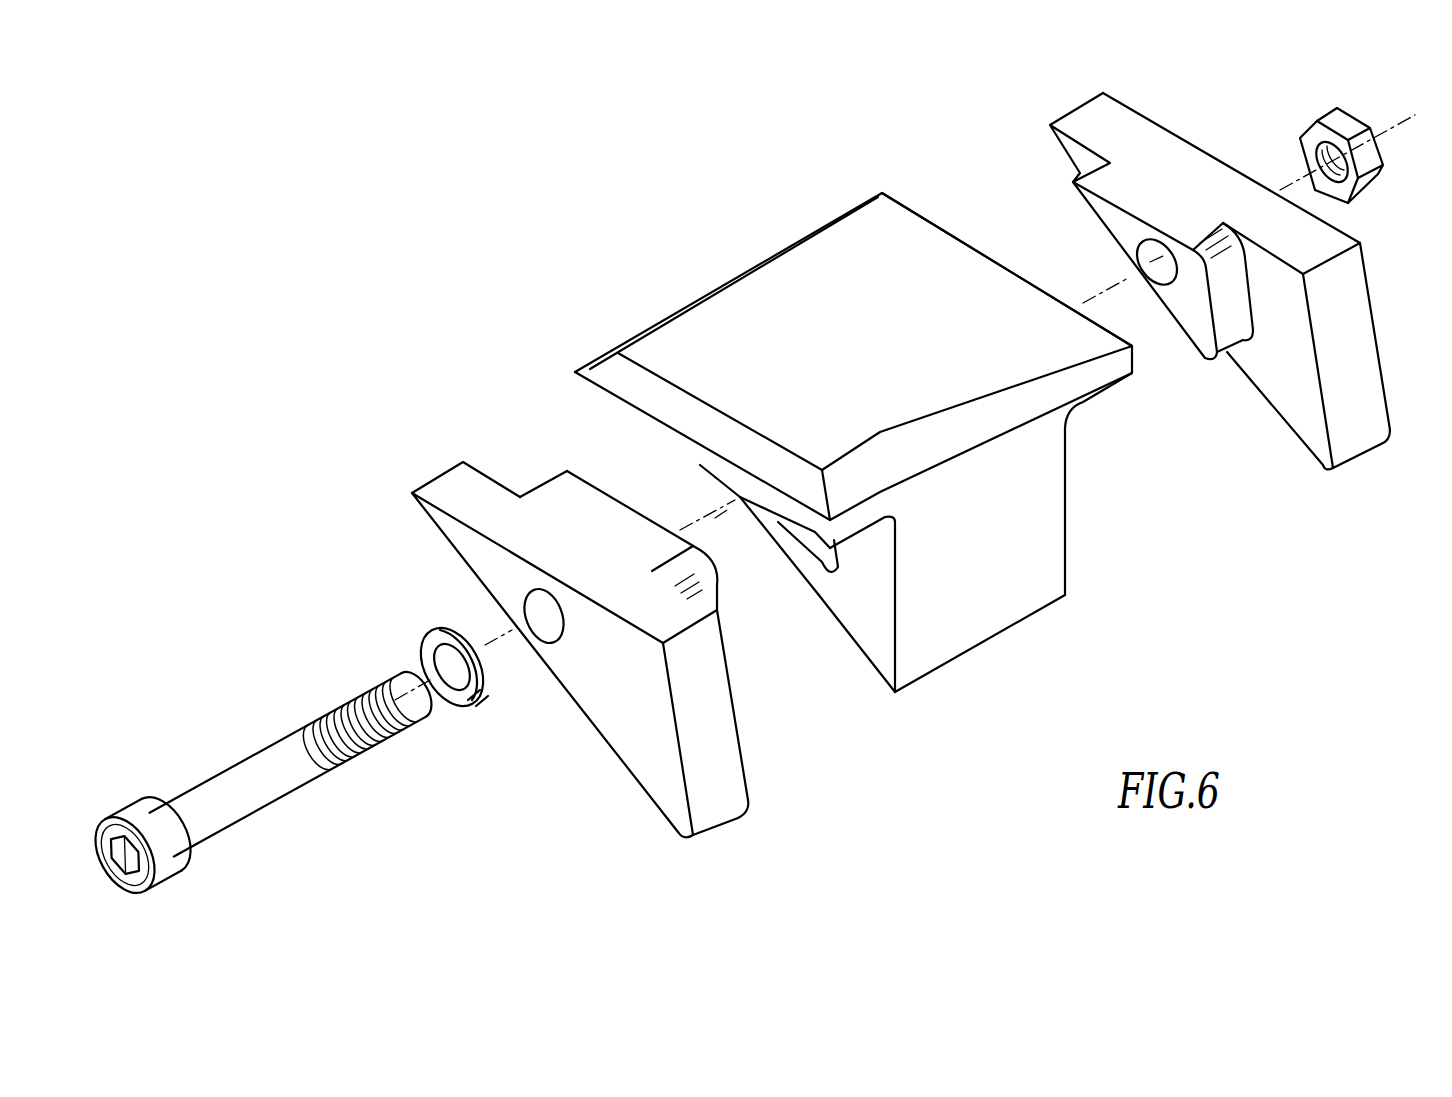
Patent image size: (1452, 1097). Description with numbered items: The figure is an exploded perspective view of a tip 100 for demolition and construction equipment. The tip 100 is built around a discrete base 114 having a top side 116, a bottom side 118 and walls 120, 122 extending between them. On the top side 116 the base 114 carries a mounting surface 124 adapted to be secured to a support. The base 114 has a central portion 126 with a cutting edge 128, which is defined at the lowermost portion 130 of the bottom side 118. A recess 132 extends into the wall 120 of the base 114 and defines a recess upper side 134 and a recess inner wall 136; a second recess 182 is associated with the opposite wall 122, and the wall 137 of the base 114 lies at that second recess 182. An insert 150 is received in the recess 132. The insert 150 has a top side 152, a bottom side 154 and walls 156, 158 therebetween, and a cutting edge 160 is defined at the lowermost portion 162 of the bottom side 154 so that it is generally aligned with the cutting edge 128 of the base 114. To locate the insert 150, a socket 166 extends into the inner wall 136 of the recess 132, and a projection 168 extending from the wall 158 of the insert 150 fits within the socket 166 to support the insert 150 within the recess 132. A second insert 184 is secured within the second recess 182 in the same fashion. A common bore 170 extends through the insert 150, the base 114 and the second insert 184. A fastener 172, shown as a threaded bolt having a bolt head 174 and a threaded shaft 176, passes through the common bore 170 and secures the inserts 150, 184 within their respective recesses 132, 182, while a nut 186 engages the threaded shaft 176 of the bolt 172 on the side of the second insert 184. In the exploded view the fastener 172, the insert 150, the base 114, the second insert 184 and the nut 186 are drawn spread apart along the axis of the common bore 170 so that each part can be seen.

The tip 100 is at (642, 230).
The base 114 is at (790, 282).
The top side 116 is at (898, 223).
The bottom side 118 is at (877, 673).
The wall 120 is at (608, 407).
The wall 122 is at (1134, 364).
The mounting surface 124 is at (850, 236).
The central portion 126 is at (1007, 613).
The cutting edge 128 is at (958, 660).
The lowermost portion 130 is at (867, 635).
The recess 132 is at (872, 572).
The recess upper side 134 is at (575, 375).
The recess inner wall 136 is at (847, 612).
The wall 137 is at (1067, 552).
The insert 150 is at (608, 717).
The top side 152 is at (452, 490).
The bottom side 154 is at (673, 830).
The wall 156 is at (632, 745).
The wall 158 is at (478, 465).
The cutting edge 160 is at (748, 805).
The lowermost portion 162 is at (665, 793).
The socket 166 is at (820, 557).
The projection 168 is at (567, 507).
The common bore 170 is at (549, 637).
The fastener 172 is at (409, 706).
The bolt head 174 is at (175, 863).
The threaded shaft 176 is at (343, 710).
The second recess 182 is at (1097, 450).
The second insert 184 is at (1155, 137).
The nut 186 is at (1375, 160).